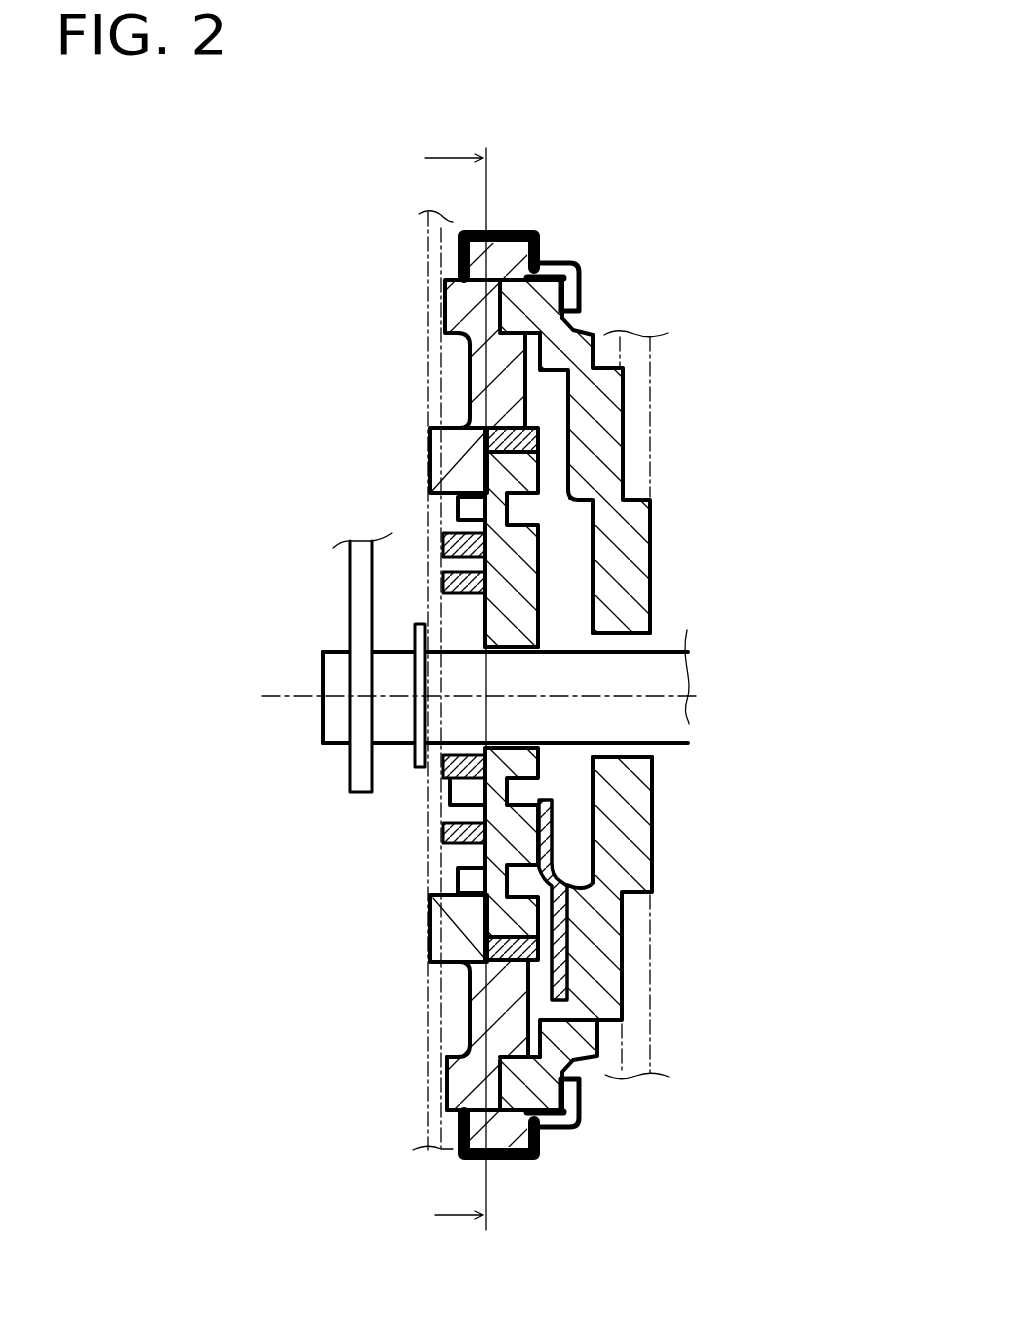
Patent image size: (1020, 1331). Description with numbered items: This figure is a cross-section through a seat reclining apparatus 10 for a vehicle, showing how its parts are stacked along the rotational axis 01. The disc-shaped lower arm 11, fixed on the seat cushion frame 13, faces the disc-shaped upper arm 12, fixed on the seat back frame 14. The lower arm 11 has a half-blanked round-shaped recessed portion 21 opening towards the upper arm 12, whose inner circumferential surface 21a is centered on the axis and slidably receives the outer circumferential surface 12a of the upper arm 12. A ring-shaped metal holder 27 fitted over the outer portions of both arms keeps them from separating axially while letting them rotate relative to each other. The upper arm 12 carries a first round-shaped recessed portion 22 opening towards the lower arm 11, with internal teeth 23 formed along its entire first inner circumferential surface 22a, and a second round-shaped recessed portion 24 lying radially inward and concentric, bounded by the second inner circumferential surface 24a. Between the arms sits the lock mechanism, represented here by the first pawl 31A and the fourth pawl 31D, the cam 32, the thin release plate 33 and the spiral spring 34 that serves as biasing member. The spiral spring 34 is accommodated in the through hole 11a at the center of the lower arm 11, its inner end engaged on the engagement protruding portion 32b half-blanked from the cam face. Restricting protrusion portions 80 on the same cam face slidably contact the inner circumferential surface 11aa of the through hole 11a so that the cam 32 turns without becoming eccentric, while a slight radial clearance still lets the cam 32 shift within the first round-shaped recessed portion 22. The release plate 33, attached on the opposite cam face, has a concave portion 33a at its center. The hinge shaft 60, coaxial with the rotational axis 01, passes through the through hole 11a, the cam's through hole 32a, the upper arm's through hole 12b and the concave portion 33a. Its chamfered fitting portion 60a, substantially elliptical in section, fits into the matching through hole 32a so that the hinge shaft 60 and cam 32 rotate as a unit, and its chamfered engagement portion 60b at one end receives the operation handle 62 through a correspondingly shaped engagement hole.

The seat reclining apparatus 10 is at (602, 152).
The lower arm 11 is at (436, 308).
The through hole 11a is at (443, 890).
The inner circumferential surface 11aa is at (464, 1009).
The upper arm 12 is at (637, 463).
The outer circumferential surface 12a is at (503, 233).
The through hole 12b is at (624, 633).
The seat cushion frame 13 is at (432, 362).
The seat back frame 14 is at (655, 420).
The round-shaped recessed portion 21 is at (567, 1093).
The inner circumferential surface 21a is at (535, 1100).
The first round-shaped recessed portion 22 is at (525, 1040).
The first inner circumferential surface 22a is at (520, 1058).
The internal teeth 23 is at (545, 340).
The second round-shaped recessed portion 24 is at (548, 1018).
The second inner circumferential surface 24a is at (573, 392).
The holder 27 is at (573, 251).
The first pawl 31A is at (480, 442).
The fourth pawl 31D is at (530, 990).
The cam 32 is at (551, 555).
The through hole 32a is at (518, 650).
The engagement protruding portion 32b is at (465, 796).
The release plate 33 is at (571, 860).
The concave portion 33a is at (547, 800).
The spiral spring 34 is at (436, 587).
The hinge shaft 60 is at (316, 663).
The fitting portion 60a is at (526, 645).
The engagement portion 60b is at (338, 652).
The operation handle 62 is at (352, 601).
The restricting protrusion portions 80 is at (462, 510).
The rotational axis 01 is at (300, 690).